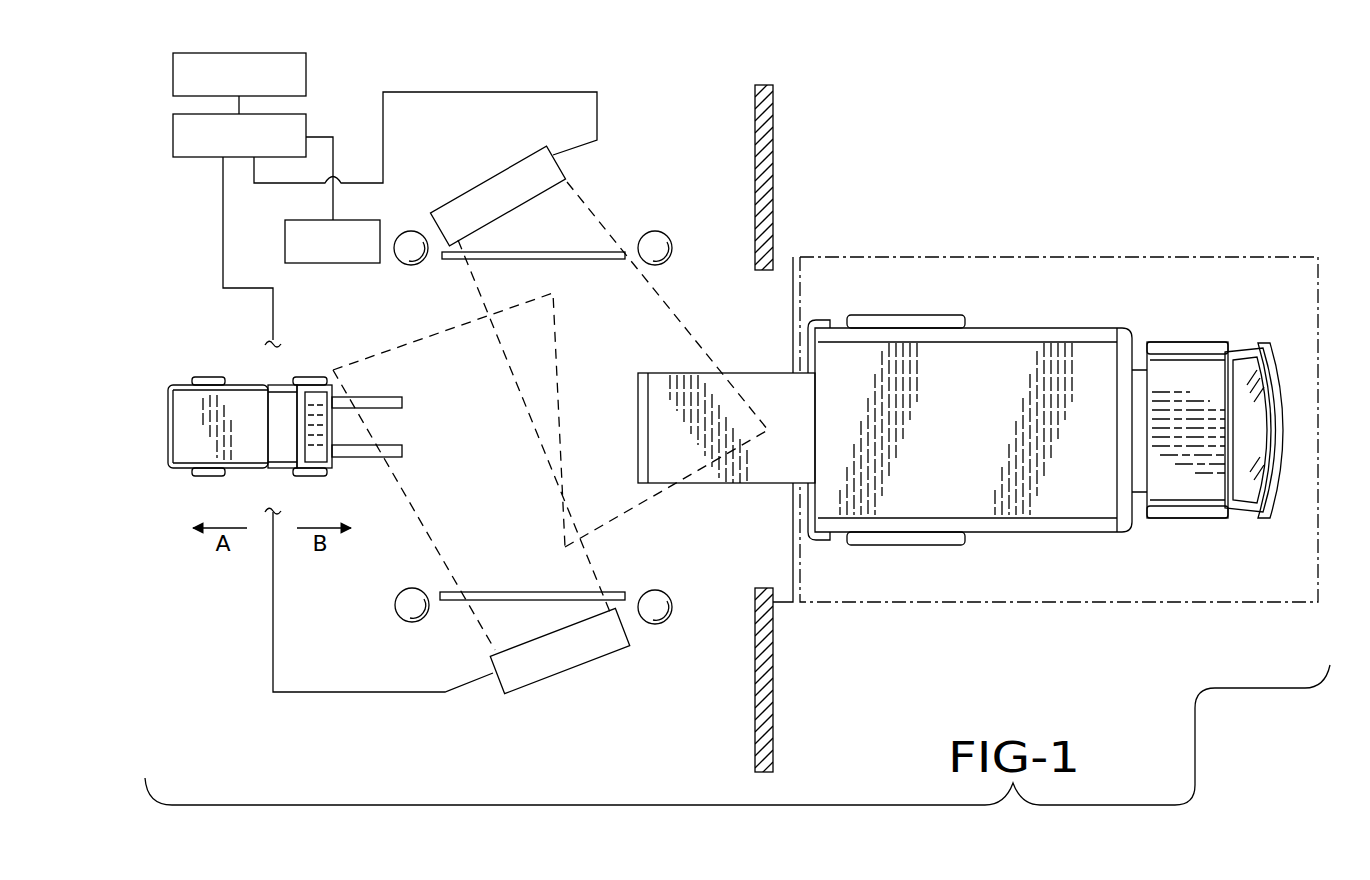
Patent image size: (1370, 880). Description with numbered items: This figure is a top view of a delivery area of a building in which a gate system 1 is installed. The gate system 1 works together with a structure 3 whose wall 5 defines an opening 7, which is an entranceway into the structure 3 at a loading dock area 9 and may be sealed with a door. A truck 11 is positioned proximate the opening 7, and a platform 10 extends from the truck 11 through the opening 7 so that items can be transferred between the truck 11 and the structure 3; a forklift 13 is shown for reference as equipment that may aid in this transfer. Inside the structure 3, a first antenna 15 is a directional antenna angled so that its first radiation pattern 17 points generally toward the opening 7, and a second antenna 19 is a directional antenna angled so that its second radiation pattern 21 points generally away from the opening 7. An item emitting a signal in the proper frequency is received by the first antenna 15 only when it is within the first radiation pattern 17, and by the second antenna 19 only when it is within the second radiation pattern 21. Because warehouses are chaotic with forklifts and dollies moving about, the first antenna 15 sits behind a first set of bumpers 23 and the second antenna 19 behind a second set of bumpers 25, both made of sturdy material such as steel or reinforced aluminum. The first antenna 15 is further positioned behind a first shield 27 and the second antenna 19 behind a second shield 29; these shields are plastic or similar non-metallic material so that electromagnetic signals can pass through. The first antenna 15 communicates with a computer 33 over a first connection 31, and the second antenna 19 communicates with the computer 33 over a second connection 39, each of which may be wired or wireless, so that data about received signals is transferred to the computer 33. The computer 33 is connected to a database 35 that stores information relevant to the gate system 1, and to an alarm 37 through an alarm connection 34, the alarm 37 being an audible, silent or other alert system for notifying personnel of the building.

The gate system 1 is at (640, 100).
The structure 3 is at (710, 155).
The wall 5 is at (774, 170).
The opening 7 is at (762, 278).
The loading dock area 9 is at (1117, 250).
The platform 10 is at (760, 385).
The truck 11 is at (1067, 500).
The forklift 13 is at (248, 384).
The first antenna 15 is at (482, 180).
The first radiation pattern 17 is at (690, 337).
The second antenna 19 is at (565, 672).
The second radiation pattern 21 is at (437, 334).
The first set of bumpers 23 is at (408, 231).
The second set of bumpers 25 is at (400, 600).
The first shield 27 is at (555, 252).
The second shield 29 is at (510, 592).
The first connection 31 is at (477, 92).
The computer 33 is at (203, 158).
The alarm connection 34 is at (335, 147).
The database 35 is at (307, 73).
The alarm 37 is at (305, 219).
The second connection 39 is at (348, 692).